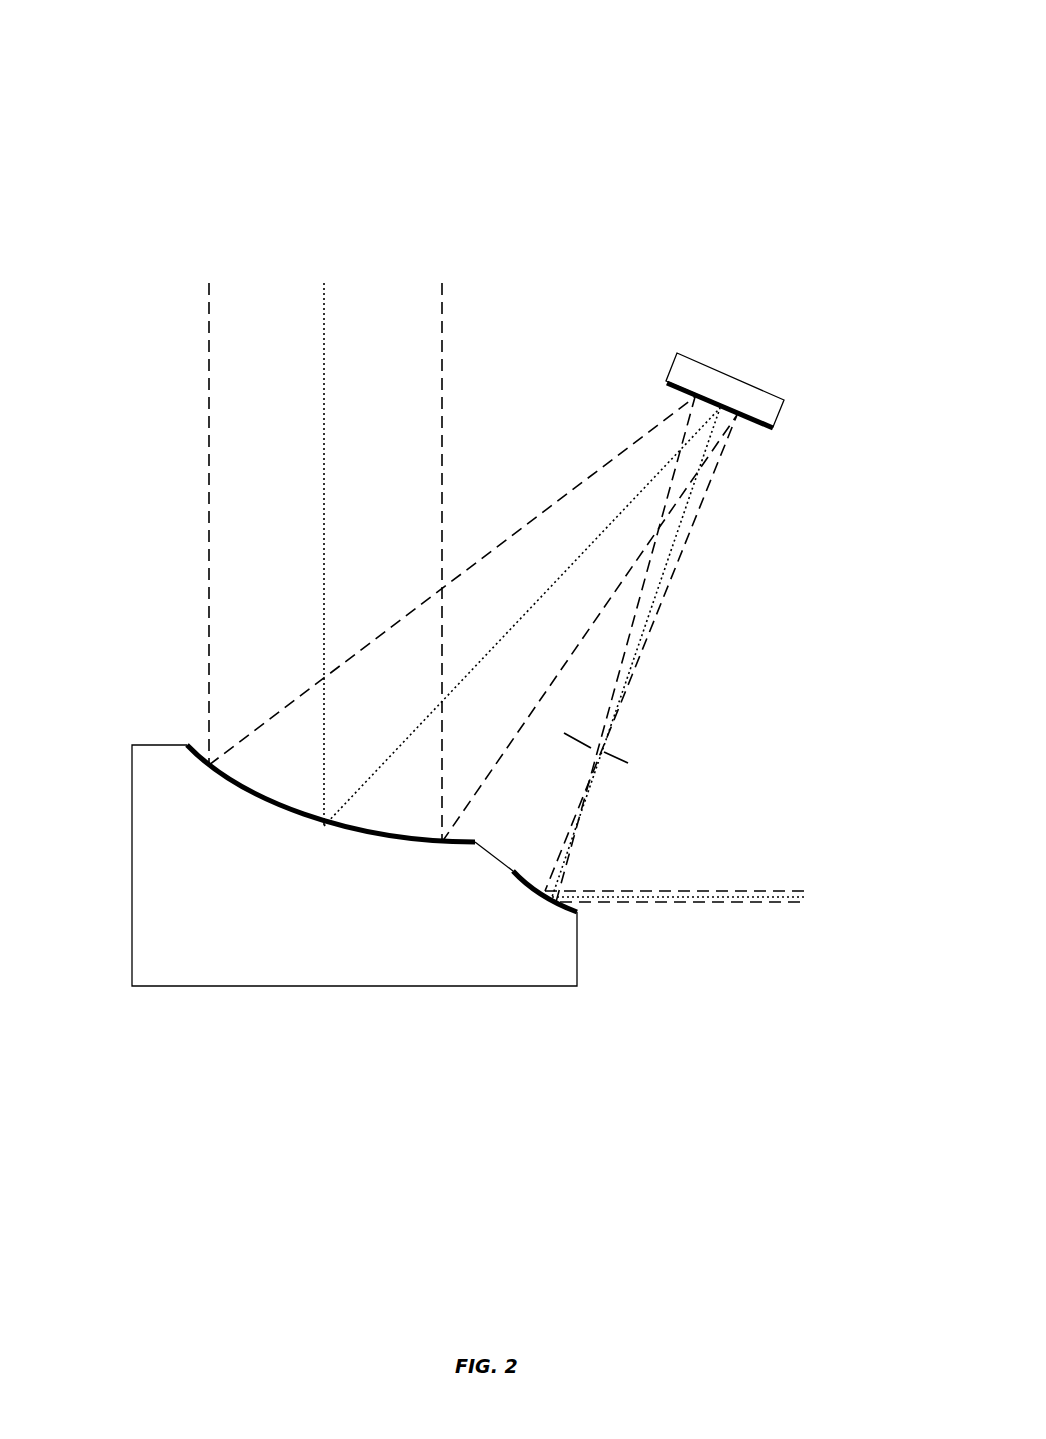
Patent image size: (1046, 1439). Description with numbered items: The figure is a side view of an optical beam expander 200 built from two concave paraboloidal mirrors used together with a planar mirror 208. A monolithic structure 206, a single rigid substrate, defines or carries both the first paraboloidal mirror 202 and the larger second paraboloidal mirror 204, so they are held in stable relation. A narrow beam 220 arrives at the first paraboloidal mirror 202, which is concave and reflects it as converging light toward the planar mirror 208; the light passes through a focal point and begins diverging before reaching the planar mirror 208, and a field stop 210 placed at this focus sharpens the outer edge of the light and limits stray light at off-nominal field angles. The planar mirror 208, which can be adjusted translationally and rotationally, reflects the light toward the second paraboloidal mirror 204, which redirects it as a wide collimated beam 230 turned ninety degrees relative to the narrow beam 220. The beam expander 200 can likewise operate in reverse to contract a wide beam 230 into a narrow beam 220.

The beam expander 200 is at (95, 98).
The first paraboloidal mirror 202 is at (565, 915).
The second paraboloidal mirror 204 is at (193, 746).
The monolithic structure 206 is at (318, 986).
The planar mirror 208 is at (754, 424).
The field stop 210 is at (612, 752).
The narrow beam 220 is at (808, 906).
The wide beam 230 is at (209, 285).